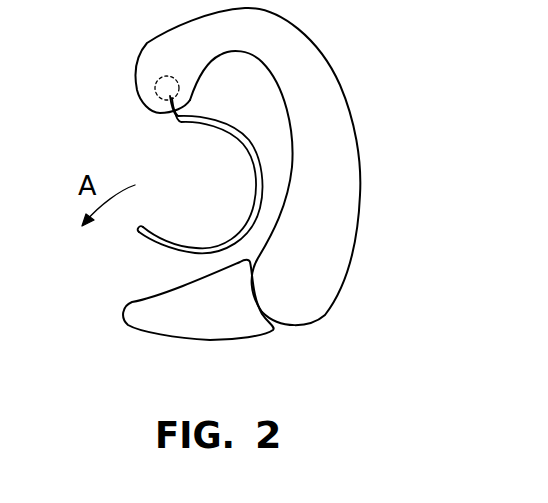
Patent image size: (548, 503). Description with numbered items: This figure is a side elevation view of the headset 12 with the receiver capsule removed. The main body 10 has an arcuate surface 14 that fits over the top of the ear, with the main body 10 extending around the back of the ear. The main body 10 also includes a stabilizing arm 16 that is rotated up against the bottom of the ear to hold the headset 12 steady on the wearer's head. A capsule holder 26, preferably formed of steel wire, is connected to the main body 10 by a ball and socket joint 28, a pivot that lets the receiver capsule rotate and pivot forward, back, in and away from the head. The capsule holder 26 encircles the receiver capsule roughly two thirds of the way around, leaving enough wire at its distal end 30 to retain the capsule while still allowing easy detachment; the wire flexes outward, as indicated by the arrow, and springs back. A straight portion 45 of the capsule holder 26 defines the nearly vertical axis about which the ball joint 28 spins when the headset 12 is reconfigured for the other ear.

The main body 10 is at (344, 236).
The headset 12 is at (385, 87).
The arcuate surface 14 is at (250, 48).
The stabilizing arm 16 is at (233, 324).
The capsule holder 26 is at (161, 195).
The ball and socket joint 28 is at (155, 86).
The distal end 30 is at (140, 242).
The straight portion 45 is at (168, 111).